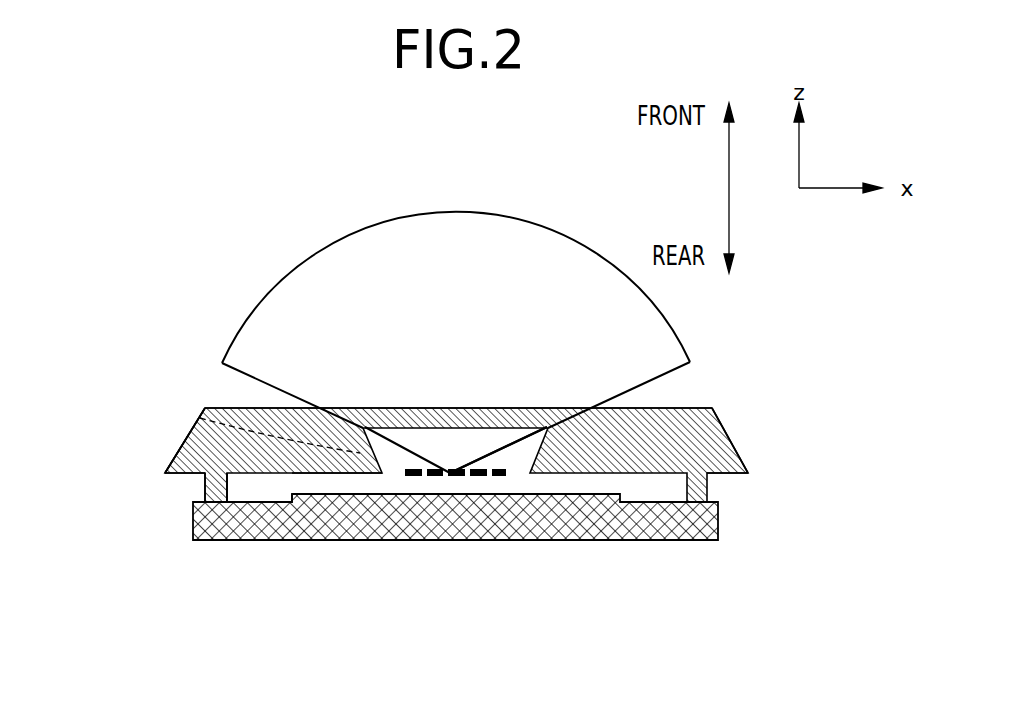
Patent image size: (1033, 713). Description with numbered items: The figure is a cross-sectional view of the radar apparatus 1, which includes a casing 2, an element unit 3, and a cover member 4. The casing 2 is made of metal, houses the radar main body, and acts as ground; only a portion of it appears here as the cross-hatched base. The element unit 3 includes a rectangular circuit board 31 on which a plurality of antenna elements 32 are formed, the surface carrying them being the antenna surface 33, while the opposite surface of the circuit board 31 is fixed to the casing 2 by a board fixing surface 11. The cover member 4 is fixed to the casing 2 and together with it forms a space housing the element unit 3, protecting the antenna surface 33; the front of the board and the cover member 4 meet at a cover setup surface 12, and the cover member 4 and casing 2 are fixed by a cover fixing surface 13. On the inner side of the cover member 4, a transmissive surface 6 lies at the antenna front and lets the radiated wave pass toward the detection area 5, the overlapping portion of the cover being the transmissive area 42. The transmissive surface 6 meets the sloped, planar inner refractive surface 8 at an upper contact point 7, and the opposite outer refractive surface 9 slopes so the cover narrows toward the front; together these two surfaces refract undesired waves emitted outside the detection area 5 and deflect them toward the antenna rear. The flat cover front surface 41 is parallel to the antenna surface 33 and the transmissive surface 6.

The radar apparatus 1 is at (158, 266).
The casing 2 is at (700, 522).
The element unit 3 is at (636, 540).
The cover member 4 is at (713, 417).
The detection area 5 is at (383, 223).
The transmissive surface 6 is at (446, 430).
The upper contact point 7 is at (200, 413).
The inner refractive surface 8 is at (527, 440).
The outer refractive surface 9 is at (738, 446).
The board fixing surface 11 is at (283, 482).
The cover setup surface 12 is at (330, 474).
The cover fixing surface 13 is at (205, 498).
The circuit board 31 is at (396, 484).
The antenna elements 32 is at (453, 476).
The antenna surface 33 is at (522, 474).
The cover front surface 41 is at (222, 404).
The transmissive area 42 is at (394, 405).